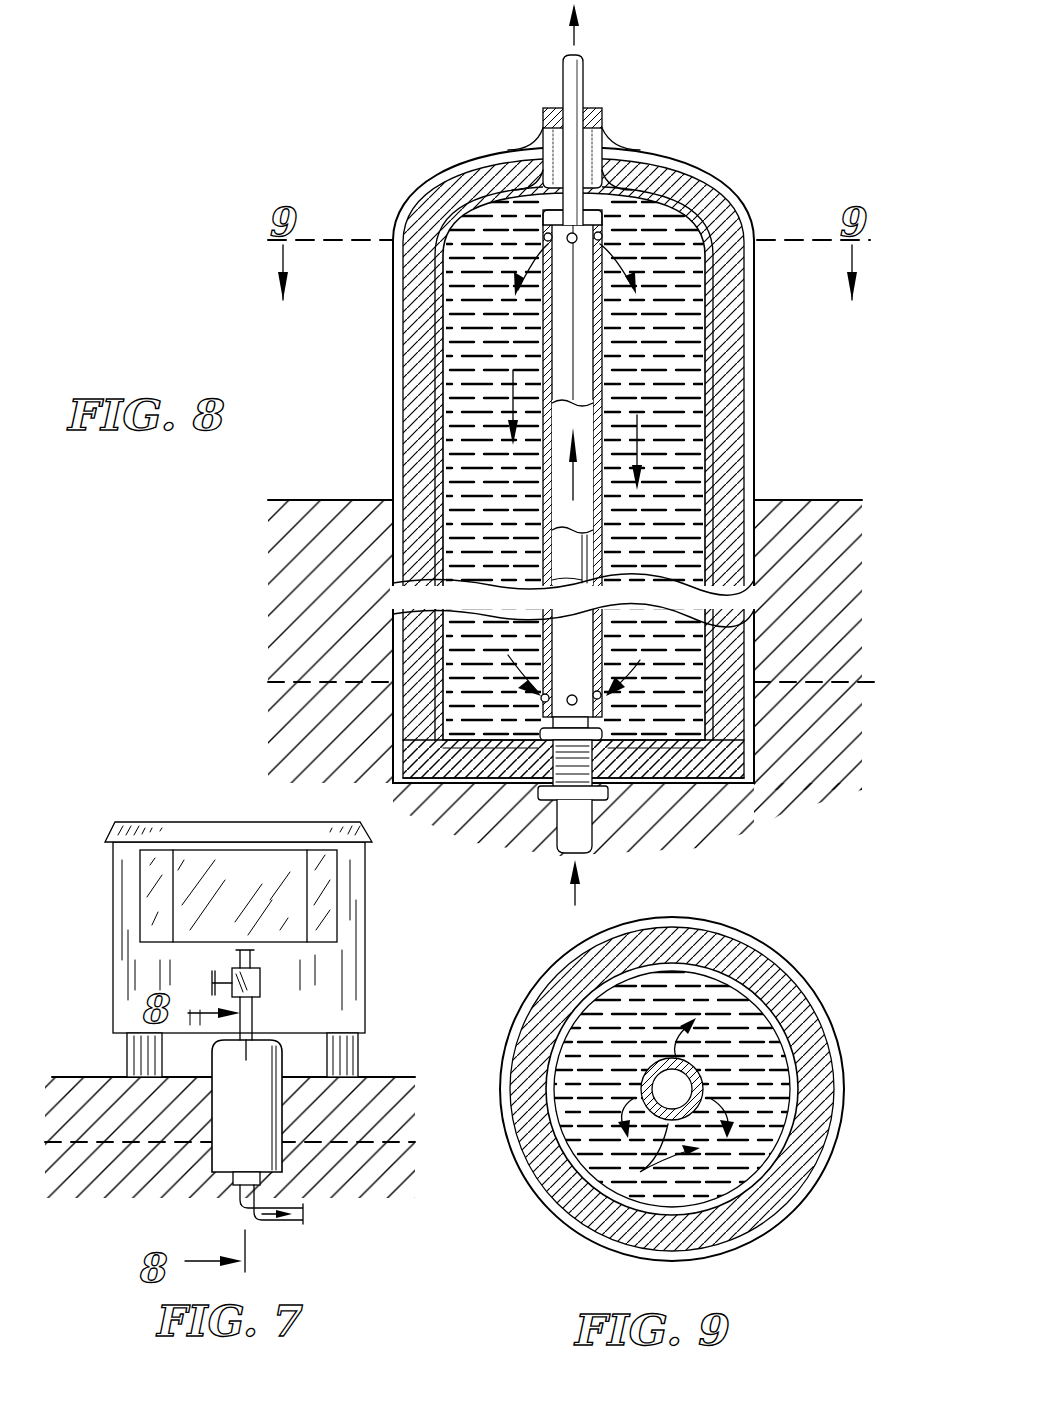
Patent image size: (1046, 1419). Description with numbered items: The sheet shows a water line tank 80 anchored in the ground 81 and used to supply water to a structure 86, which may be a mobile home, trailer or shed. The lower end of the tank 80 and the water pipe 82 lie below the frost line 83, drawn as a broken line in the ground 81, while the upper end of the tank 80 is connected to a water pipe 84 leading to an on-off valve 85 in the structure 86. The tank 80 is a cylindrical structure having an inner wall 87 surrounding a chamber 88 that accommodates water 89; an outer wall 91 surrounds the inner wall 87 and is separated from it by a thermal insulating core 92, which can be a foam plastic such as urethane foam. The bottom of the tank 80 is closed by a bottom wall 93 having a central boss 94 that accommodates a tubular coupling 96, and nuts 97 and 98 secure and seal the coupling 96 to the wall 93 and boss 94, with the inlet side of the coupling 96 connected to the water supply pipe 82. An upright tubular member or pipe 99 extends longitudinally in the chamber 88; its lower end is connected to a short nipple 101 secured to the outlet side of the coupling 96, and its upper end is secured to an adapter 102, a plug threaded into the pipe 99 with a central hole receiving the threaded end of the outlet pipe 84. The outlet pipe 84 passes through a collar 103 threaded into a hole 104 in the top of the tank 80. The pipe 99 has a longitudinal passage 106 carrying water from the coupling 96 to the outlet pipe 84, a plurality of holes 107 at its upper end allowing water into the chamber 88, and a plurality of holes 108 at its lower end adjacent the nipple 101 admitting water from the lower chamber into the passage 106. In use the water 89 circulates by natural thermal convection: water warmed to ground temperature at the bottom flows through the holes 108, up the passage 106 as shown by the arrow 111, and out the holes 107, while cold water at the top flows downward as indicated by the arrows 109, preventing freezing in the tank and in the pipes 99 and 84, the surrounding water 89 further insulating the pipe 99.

In FIG. 8, the water line tank 80 is at (578, 454).
In FIG. 7, the water line tank 80 is at (262, 1082).
In FIG. 9, the water line tank 80 is at (687, 1083).
In FIG. 8, the ground 81 is at (798, 500).
In FIG. 7, the ground 81 is at (100, 1077).
In FIG. 8, the water pipe 82 is at (560, 850).
In FIG. 7, the water pipe 82 is at (303, 1222).
In FIG. 8, the frost line 83 is at (866, 678).
In FIG. 7, the frost line 83 is at (62, 1140).
In FIG. 8, the water pipe 84 is at (586, 79).
In FIG. 7, the water pipe 84 is at (254, 1020).
In FIG. 7, the on-off valve 85 is at (262, 982).
In FIG. 7, the structure 86 is at (128, 882).
In FIG. 8, the inner wall 87 is at (742, 364).
In FIG. 9, the inner wall 87 is at (724, 968).
In FIG. 8, the chamber 88 is at (492, 364).
In FIG. 9, the chamber 88 is at (672, 1089).
In FIG. 8, the water 89 is at (690, 245).
In FIG. 9, the water 89 is at (585, 1140).
In FIG. 8, the outer wall 91 is at (408, 399).
In FIG. 9, the outer wall 91 is at (815, 1022).
In FIG. 8, the thermal insulating core 92 is at (420, 351).
In FIG. 9, the thermal insulating core 92 is at (812, 1132).
In FIG. 8, the bottom wall 93 is at (492, 780).
In FIG. 8, the central boss 94 is at (522, 785).
In FIG. 8, the tubular coupling 96 is at (598, 802).
In FIG. 8, the nut 97 is at (604, 730).
In FIG. 8, the nut 98 is at (612, 792).
In FIG. 8, the upright tubular member or pipe 99 is at (564, 463).
In FIG. 9, the upright tubular member or pipe 99 is at (700, 1080).
In FIG. 8, the nipple 101 is at (551, 722).
In FIG. 8, the adapter 102 is at (625, 168).
In FIG. 8, the collar 103 is at (604, 120).
In FIG. 8, the hole 104 is at (545, 150).
In FIG. 8, the longitudinal passage 106 is at (575, 492).
In FIG. 8, the holes 107 is at (548, 236).
In FIG. 9, the holes 107 is at (670, 1058).
In FIG. 8, the holes 108 is at (580, 694).
In FIG. 8, the arrows 109 is at (508, 412).
In FIG. 9, the arrows 109 is at (588, 1140).
In FIG. 8, the arrow 111 is at (568, 480).